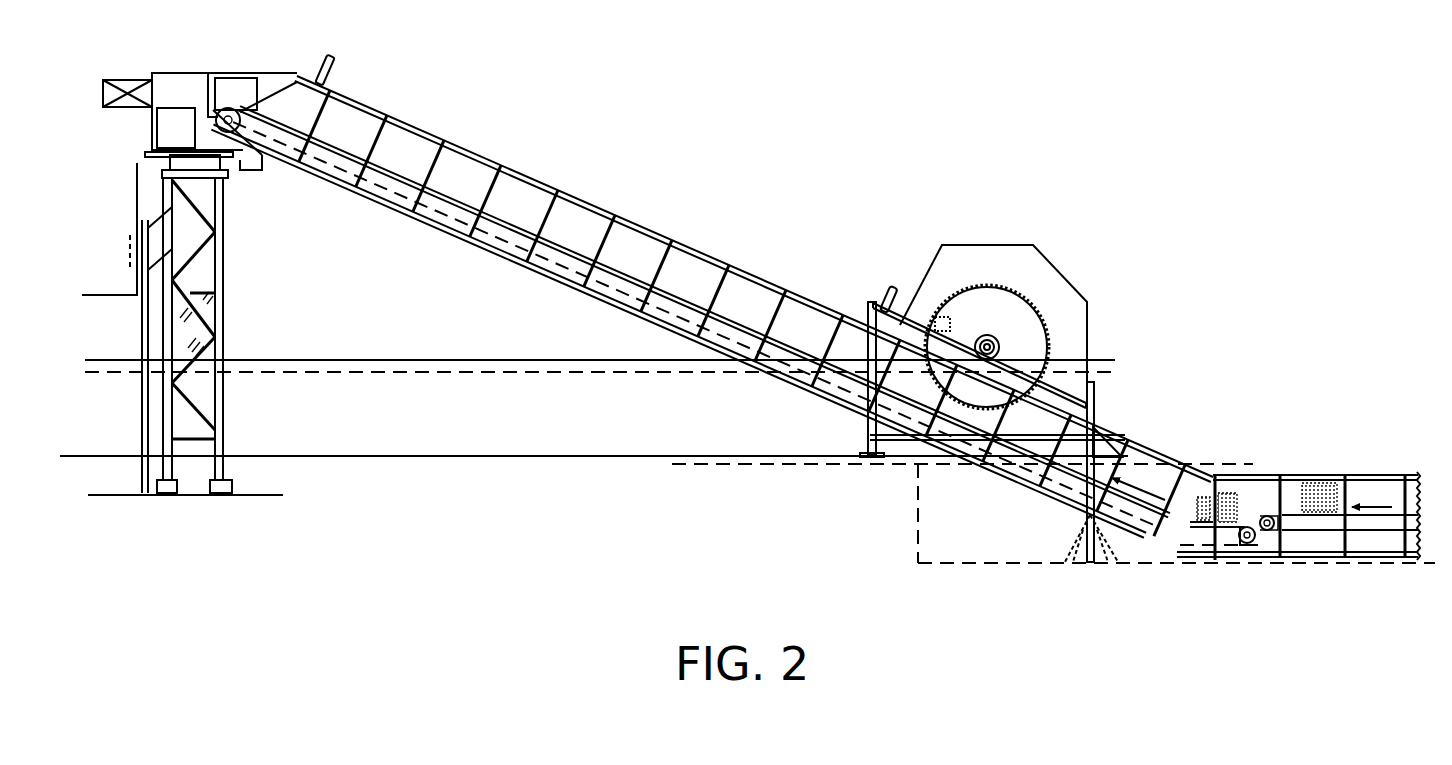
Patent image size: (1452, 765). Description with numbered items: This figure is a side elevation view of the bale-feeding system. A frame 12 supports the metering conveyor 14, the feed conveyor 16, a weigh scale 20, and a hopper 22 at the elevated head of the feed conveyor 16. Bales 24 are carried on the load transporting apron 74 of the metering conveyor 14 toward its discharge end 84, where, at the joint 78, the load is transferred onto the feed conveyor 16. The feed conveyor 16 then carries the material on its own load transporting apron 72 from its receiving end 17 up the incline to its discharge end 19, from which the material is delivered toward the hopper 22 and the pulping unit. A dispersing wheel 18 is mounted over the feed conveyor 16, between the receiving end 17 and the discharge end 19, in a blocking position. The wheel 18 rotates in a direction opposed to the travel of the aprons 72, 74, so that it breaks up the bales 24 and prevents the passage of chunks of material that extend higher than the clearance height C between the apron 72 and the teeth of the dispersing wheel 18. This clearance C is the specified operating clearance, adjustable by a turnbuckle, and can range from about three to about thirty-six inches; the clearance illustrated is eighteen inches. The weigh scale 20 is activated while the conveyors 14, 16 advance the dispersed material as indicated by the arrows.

The frame 12 is at (640, 225).
The metering conveyor 14 is at (1305, 545).
The feed conveyor 16 is at (683, 296).
The receiving end 17 is at (1247, 545).
The dispersing wheel 18 is at (995, 273).
The discharge end 19 is at (242, 160).
The weigh scale 20 is at (331, 58).
The hopper 22 is at (190, 73).
The bales 24 is at (1228, 482).
The load transporting apron 72 is at (737, 322).
The load transporting apron 74 is at (1290, 497).
The joint 78 is at (1254, 522).
The discharge end 84 is at (1267, 531).
The clearance height C is at (915, 380).